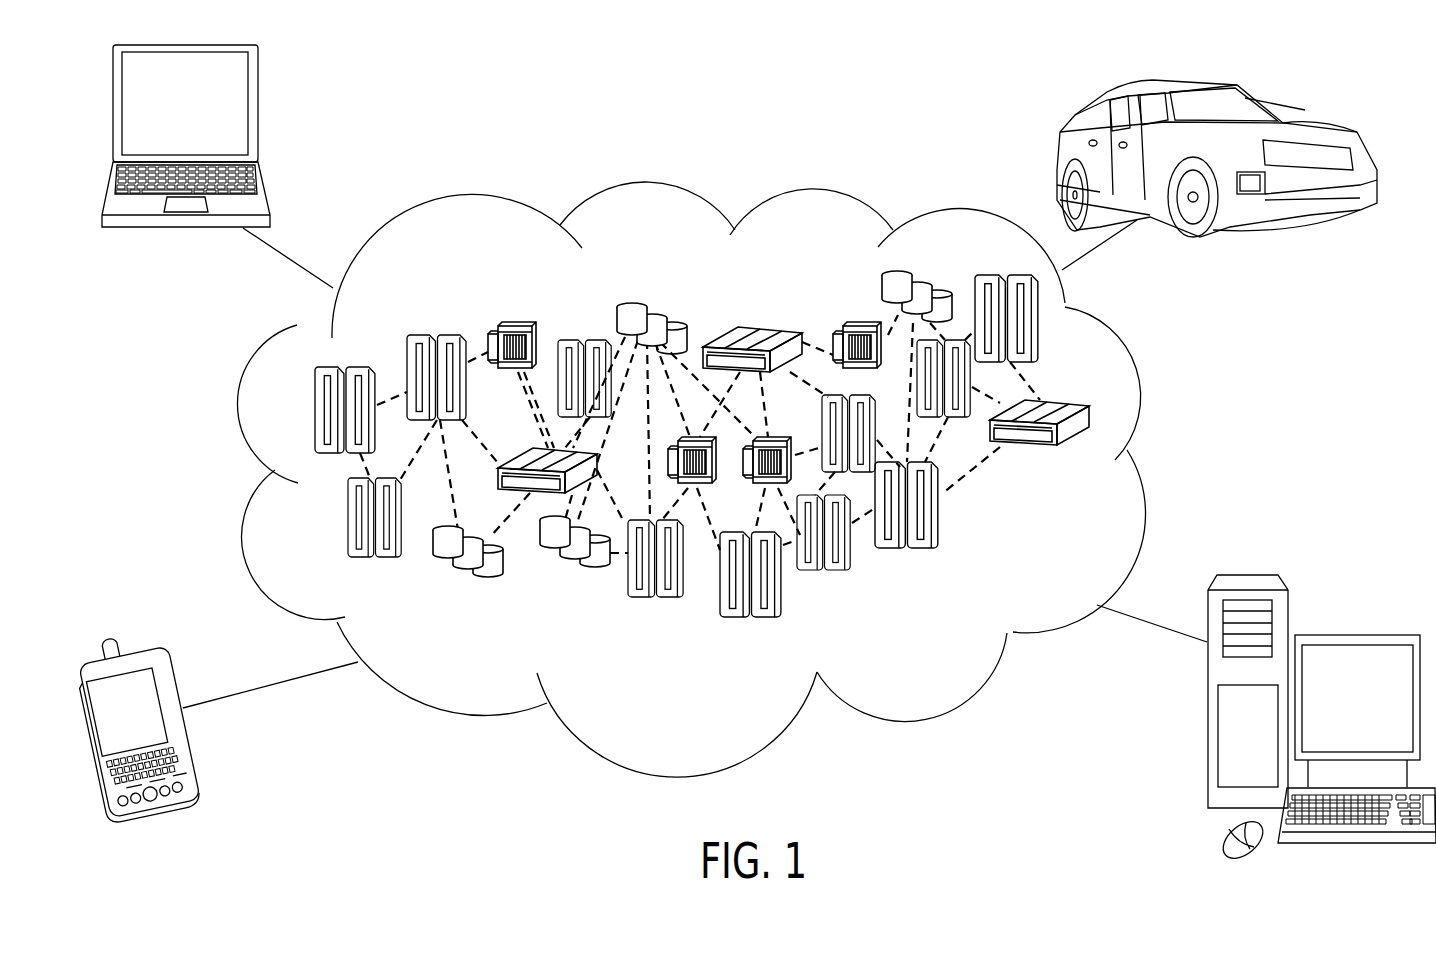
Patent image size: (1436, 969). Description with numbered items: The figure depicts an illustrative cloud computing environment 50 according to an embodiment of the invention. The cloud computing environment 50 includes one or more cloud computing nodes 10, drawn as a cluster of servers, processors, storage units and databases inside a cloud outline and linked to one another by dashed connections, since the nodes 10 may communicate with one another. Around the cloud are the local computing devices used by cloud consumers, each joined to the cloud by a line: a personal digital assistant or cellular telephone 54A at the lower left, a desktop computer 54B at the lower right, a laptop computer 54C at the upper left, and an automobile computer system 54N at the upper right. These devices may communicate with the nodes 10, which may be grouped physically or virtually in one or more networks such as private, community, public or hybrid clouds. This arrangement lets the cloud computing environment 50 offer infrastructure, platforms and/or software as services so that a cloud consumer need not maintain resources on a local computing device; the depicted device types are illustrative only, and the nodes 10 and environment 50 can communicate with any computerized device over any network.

The cloud computing nodes 10 is at (1133, 478).
The cloud computing environment 50 is at (1140, 378).
The personal digital assistant (PDA) or cellular telephone 54A is at (190, 745).
The desktop computer 54B is at (1357, 630).
The laptop computer 54C is at (260, 105).
The automobile computer system 54N is at (1058, 150).